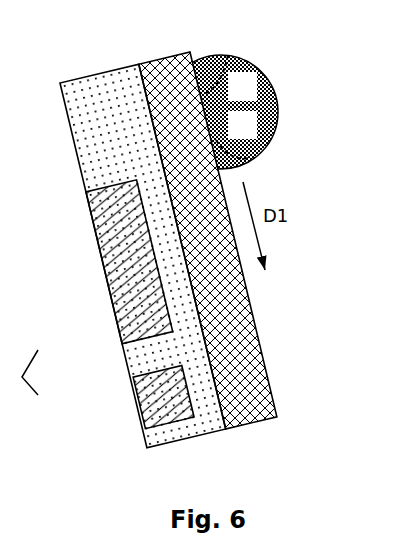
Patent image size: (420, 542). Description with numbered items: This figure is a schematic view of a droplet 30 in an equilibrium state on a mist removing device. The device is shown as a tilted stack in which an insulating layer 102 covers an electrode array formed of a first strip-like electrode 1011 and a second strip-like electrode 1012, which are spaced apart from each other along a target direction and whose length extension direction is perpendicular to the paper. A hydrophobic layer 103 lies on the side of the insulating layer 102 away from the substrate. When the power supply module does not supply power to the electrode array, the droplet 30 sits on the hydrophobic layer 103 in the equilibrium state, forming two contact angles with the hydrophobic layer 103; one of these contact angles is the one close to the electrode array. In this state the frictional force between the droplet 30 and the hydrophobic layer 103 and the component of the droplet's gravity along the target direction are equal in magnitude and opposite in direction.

The droplet 30 is at (280, 93).
The insulating layer 102 is at (93, 90).
The hydrophobic layer 103 is at (168, 72).
The first strip-like electrode 1011 is at (123, 327).
The second strip-like electrode 1012 is at (138, 405).